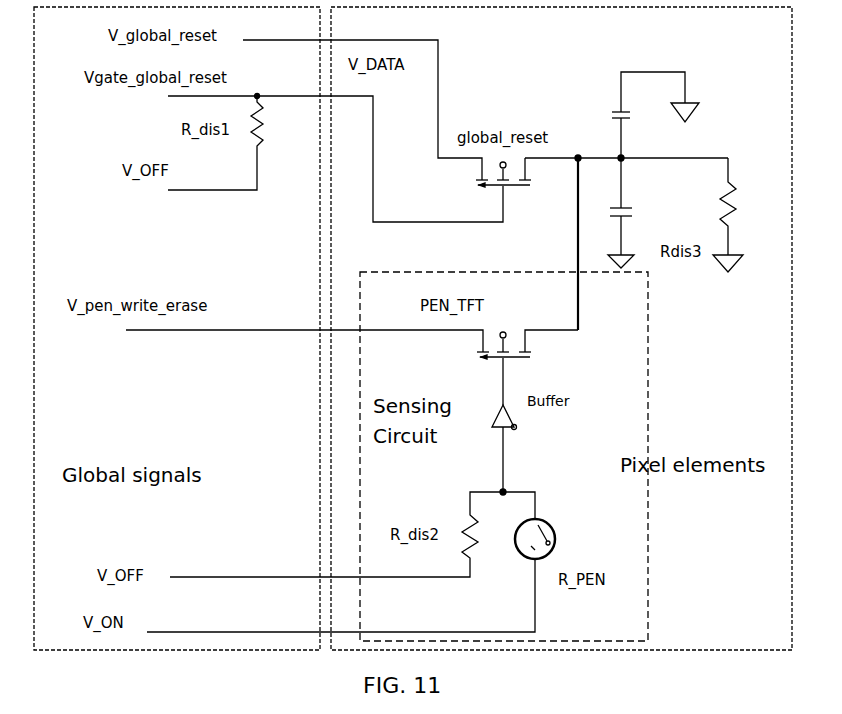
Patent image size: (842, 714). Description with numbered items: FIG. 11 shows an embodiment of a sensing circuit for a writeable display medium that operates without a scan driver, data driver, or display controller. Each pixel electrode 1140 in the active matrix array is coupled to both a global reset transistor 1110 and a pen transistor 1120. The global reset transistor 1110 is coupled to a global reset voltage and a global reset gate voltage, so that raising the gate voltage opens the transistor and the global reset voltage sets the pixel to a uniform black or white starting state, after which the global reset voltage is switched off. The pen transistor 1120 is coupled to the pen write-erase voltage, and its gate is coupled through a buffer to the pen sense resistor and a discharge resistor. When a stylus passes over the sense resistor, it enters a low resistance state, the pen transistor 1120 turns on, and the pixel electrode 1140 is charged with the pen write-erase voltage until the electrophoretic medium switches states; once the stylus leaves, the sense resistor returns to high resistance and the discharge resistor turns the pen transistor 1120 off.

The global_reset TFT 1110 is at (523, 190).
The PEN_TFT 1120 is at (520, 357).
The pixel electrode 1140 is at (648, 228).